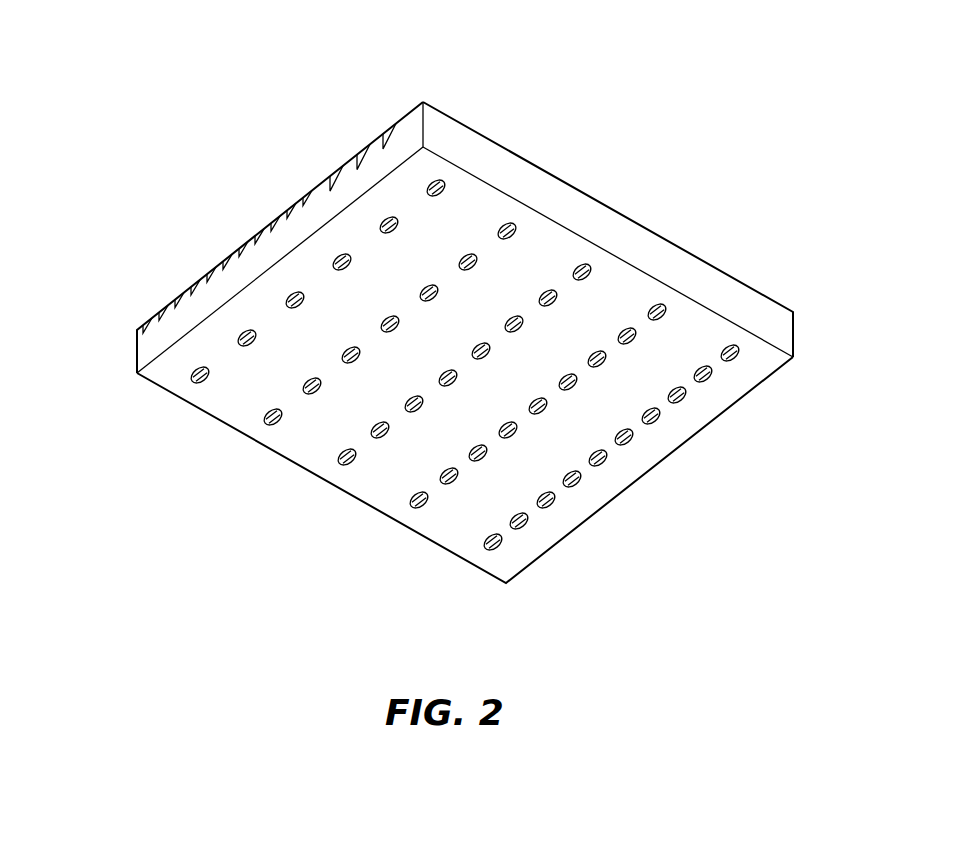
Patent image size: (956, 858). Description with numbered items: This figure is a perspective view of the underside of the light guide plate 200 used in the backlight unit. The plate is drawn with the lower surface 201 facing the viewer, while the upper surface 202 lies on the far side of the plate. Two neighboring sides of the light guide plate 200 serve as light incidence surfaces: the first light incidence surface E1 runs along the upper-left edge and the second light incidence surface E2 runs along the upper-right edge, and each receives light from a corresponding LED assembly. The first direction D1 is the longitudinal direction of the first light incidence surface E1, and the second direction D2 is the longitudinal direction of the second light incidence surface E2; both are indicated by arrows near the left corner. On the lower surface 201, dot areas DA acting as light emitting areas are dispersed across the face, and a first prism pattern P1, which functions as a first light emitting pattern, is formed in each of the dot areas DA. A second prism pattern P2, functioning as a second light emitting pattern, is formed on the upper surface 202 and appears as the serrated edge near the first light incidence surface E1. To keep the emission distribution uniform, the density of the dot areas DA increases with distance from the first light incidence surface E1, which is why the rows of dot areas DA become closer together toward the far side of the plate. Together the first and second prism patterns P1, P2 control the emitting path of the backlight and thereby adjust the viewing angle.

The light guide plate 200 is at (484, 336).
The lower surface 201 is at (465, 406).
The upper surface 202 is at (422, 100).
The first light incidence surface E1 is at (280, 190).
The second light incidence surface E2 is at (508, 172).
The first prism pattern P1 is at (352, 470).
The second prism pattern P2 is at (388, 127).
The first direction D1 is at (35, 365).
The second direction D2 is at (35, 365).
The dot area DA is at (462, 421).